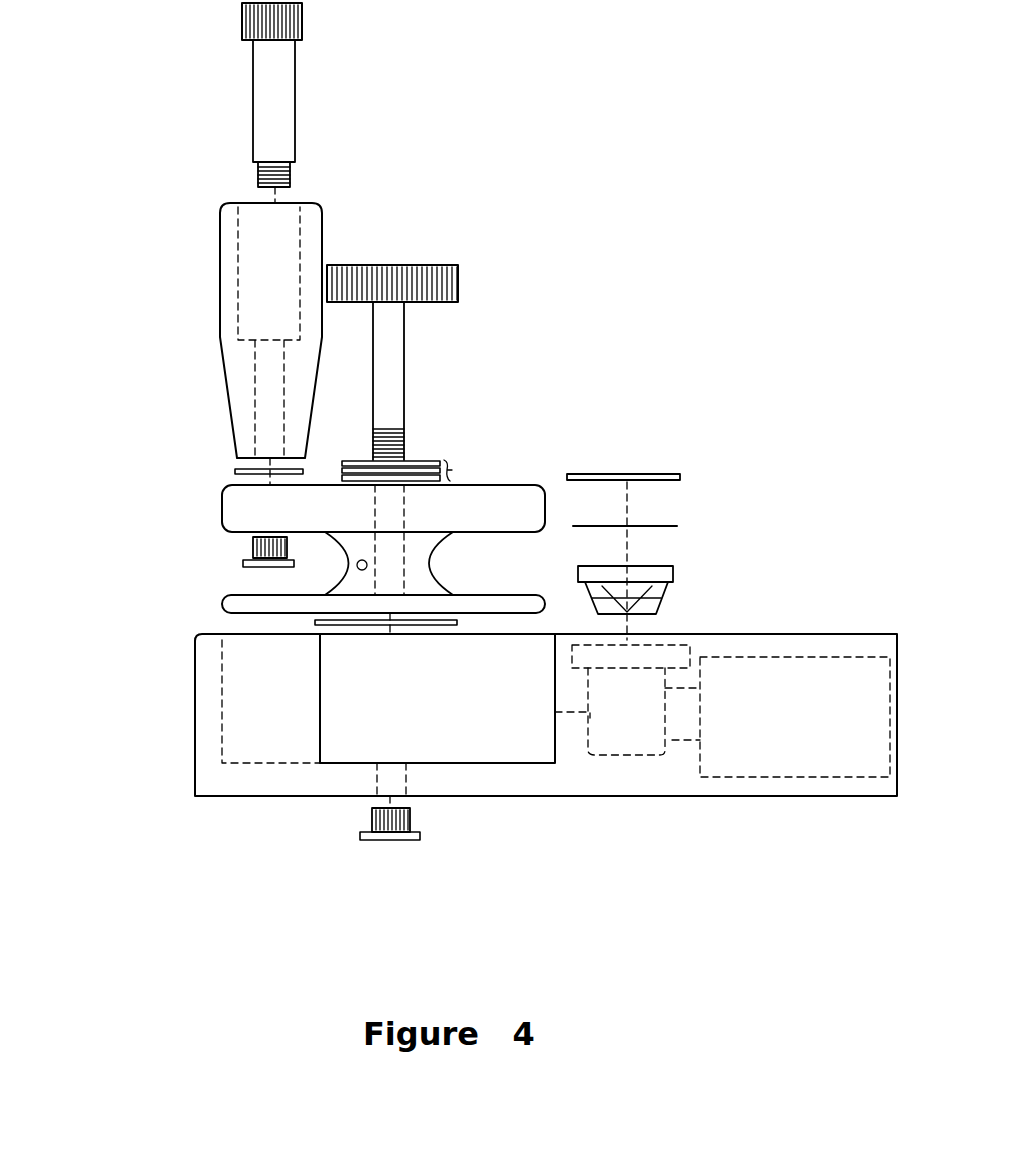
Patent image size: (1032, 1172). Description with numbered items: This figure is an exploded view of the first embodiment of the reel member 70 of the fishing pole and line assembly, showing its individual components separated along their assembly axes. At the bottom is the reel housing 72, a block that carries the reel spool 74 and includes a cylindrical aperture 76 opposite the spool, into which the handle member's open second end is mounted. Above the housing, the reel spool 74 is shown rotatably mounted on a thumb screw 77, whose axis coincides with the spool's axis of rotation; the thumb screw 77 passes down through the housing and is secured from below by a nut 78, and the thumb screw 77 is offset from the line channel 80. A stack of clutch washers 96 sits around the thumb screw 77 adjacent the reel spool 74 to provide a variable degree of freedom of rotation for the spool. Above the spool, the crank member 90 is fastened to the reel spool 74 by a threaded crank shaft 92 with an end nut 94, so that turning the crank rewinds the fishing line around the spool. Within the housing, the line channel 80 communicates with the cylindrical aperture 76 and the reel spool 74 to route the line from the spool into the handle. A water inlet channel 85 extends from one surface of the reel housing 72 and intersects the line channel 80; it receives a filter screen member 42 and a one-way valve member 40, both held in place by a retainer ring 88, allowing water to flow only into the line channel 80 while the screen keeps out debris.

The threaded crank shaft 92 is at (272, 98).
The crank member 90 is at (220, 272).
The thumb screw 77 is at (418, 265).
The clutch washers 96 is at (488, 444).
The reel spool member 74 is at (498, 500).
The end nut 94 is at (245, 553).
The retainer ring 88 is at (665, 474).
The filter screen member 42 is at (677, 526).
The one-way valve member 40 is at (655, 574).
The cylindrical aperture 76 is at (906, 672).
The reel housing 72 is at (753, 640).
The water inlet channel 85 is at (623, 707).
The line channel 80 is at (572, 718).
The nut for thumb screw 78 is at (383, 850).
The reel member 70 is at (165, 862).